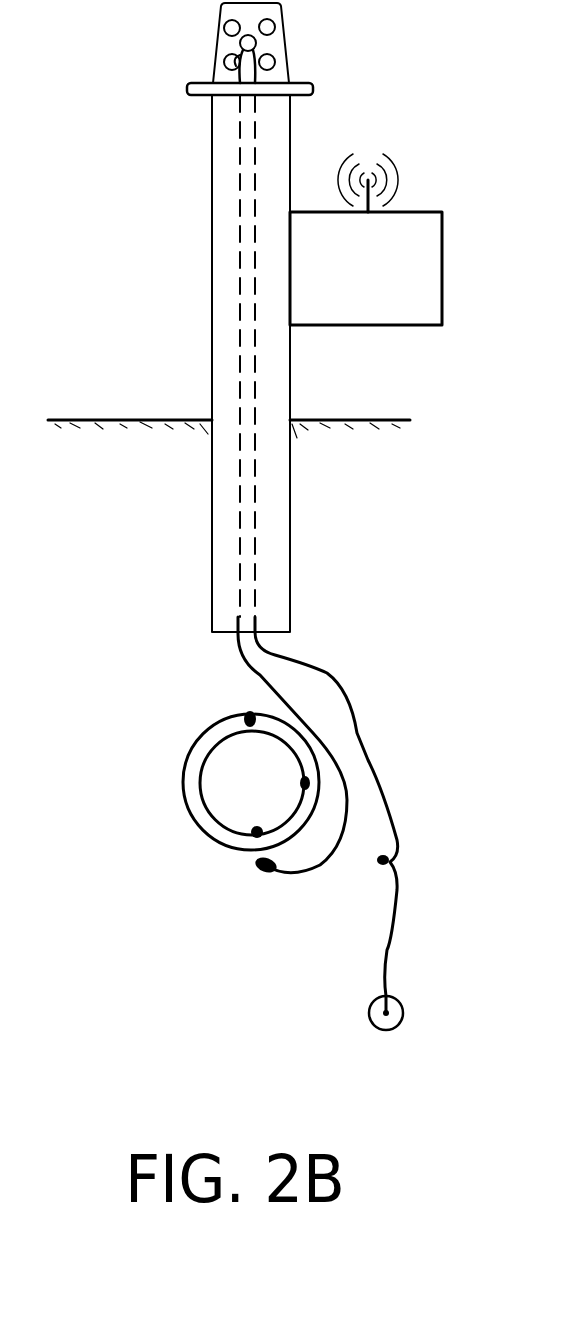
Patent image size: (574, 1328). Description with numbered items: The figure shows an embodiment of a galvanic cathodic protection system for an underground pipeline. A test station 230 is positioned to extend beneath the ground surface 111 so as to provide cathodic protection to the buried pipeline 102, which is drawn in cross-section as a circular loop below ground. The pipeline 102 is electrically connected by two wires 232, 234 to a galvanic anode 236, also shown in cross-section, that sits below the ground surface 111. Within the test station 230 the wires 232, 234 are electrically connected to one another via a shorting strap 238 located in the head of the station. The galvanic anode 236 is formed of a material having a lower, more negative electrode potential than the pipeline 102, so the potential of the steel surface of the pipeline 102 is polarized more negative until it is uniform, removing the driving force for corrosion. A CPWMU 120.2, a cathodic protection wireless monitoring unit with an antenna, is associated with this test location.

The test station 230 is at (212, 195).
The shorting strap 238 is at (280, 38).
The ground surface 111 is at (88, 418).
The CPWMU 120.2 is at (402, 278).
The buried pipeline 102 is at (188, 818).
The wire 232 is at (277, 873).
The wire 234 is at (347, 707).
The galvanic anode 236 is at (367, 1023).